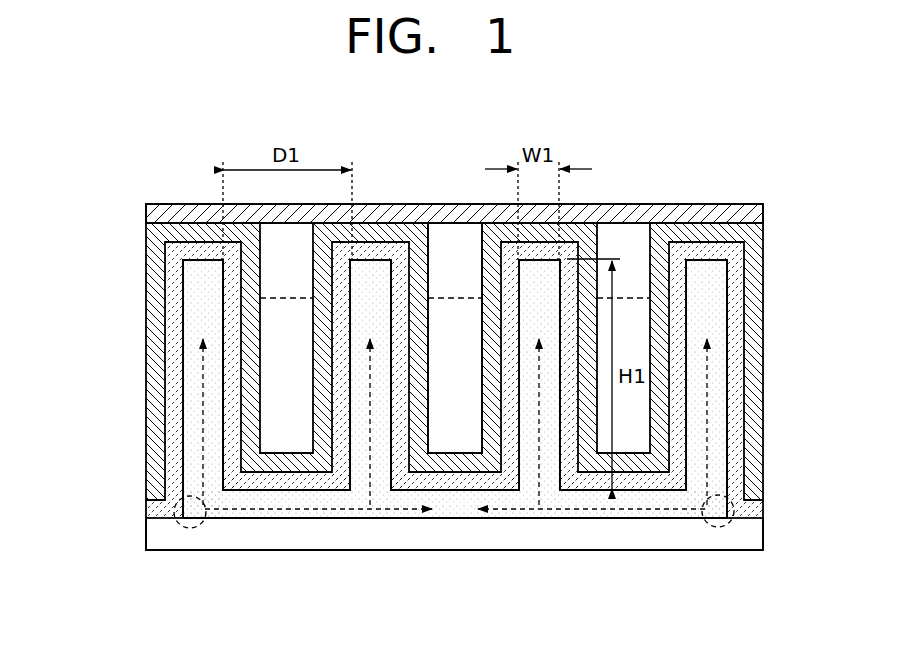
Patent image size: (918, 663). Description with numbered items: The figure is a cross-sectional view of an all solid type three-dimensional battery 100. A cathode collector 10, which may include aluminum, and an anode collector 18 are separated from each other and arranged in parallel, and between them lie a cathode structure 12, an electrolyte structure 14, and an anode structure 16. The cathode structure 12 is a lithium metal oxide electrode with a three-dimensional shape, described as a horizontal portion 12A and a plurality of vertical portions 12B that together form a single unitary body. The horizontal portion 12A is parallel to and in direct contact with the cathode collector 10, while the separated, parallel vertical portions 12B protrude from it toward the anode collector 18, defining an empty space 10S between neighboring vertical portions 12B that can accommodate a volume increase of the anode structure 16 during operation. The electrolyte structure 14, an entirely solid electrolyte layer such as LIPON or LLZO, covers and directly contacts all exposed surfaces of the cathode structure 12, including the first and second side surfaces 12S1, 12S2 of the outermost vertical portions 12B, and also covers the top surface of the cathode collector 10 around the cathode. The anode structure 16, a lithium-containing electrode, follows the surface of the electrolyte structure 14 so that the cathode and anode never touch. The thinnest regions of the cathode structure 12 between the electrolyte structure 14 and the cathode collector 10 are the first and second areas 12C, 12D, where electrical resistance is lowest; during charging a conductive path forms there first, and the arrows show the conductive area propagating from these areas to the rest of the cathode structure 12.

The all solid type 3D battery 100 is at (127, 197).
The cathode collector 10 is at (322, 531).
The empty space 10S is at (452, 240).
The cathode structure 12 is at (552, 598).
The horizontal portion 12A is at (457, 508).
The vertical portion 12B is at (718, 441).
The first area 12C is at (177, 510).
The second area 12D is at (734, 509).
The first side surface 12S1 is at (181, 388).
The second side surface 12S2 is at (730, 397).
The electrolyte structure 14 is at (737, 318).
The anode structure 16 is at (760, 254).
The anode collector 18 is at (705, 208).